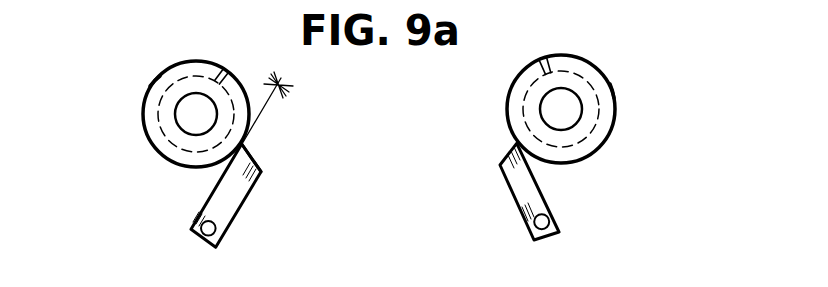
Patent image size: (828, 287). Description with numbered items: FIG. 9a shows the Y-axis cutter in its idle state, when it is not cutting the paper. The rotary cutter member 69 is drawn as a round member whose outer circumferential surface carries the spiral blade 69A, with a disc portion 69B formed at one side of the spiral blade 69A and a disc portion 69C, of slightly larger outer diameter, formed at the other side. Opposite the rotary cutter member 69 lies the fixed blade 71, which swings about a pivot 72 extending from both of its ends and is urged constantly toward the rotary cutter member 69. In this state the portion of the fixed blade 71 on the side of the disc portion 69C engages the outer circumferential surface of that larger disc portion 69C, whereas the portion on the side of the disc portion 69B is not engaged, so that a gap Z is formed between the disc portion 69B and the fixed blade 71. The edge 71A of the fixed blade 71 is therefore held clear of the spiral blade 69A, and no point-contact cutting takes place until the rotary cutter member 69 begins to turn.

The rotary cutter member 69 is at (187, 117).
The spiral blade 69A is at (232, 65).
The disc portion 69B is at (148, 85).
The disc portion 69C is at (598, 78).
The fixed blade 71 is at (253, 188).
The edge 71A is at (245, 143).
The pivot 72 is at (217, 227).
The gap Z is at (269, 103).